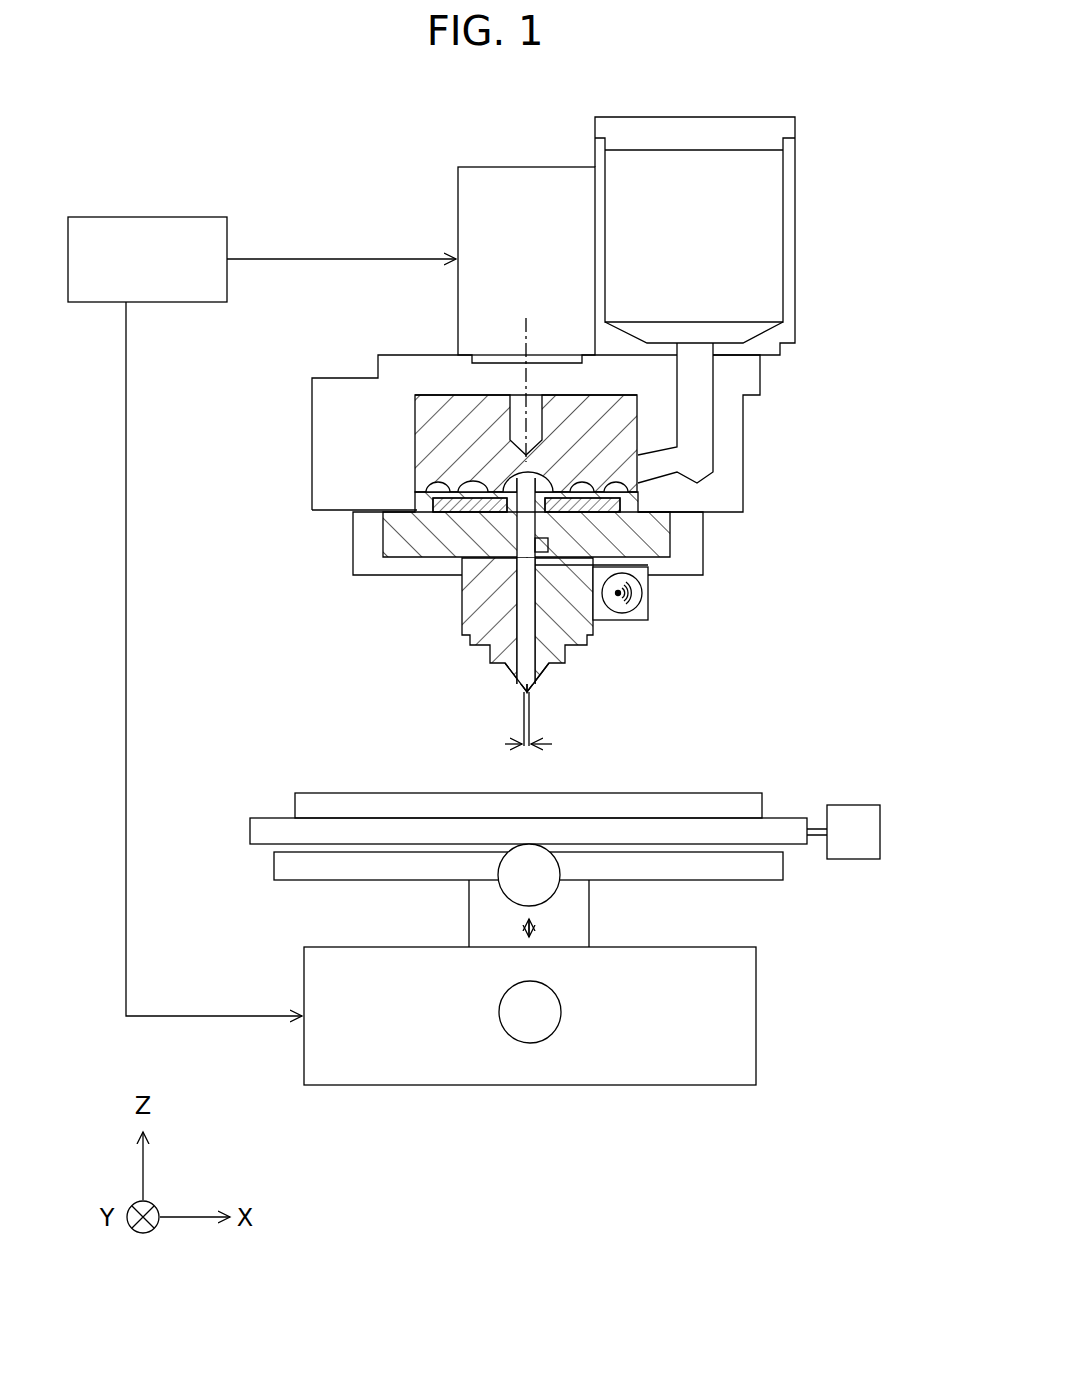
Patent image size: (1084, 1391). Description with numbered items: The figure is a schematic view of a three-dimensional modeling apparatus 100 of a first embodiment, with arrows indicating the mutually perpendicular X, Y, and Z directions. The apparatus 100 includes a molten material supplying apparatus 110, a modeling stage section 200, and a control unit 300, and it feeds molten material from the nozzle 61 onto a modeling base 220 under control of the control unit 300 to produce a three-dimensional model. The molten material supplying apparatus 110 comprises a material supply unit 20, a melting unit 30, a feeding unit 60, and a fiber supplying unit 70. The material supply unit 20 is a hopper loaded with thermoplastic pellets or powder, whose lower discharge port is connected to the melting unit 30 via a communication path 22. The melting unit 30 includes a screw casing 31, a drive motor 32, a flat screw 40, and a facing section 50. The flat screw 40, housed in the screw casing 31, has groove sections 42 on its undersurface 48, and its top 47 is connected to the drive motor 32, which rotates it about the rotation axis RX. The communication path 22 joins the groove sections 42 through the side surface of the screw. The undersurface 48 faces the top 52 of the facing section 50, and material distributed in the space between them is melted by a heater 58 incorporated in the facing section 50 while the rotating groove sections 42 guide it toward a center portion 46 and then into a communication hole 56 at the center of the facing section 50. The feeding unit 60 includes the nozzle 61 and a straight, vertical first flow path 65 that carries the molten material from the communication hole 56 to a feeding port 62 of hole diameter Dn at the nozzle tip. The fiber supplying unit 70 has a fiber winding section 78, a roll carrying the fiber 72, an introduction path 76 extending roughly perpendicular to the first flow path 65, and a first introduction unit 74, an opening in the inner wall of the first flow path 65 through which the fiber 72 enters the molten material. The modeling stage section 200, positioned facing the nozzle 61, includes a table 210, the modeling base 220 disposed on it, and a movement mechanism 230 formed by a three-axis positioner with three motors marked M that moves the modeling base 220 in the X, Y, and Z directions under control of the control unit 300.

The three-dimensional modeling apparatus 100 is at (186, 110).
The molten material supplying apparatus 110 is at (351, 123).
The material supply unit 20 is at (795, 228).
The communication path 22 is at (693, 416).
The melting unit 30 is at (361, 227).
The screw casing 31 is at (427, 355).
The drive motor 32 is at (458, 198).
The flat screw 40 is at (417, 418).
The groove sections 42 is at (470, 472).
The center portion 46 is at (445, 462).
The top 47 is at (450, 395).
The undersurface 48 is at (515, 480).
The facing section 50 is at (418, 527).
The top 52 is at (470, 500).
The communication hole 56 is at (530, 518).
The heater 58 is at (618, 506).
The first flow path 65 is at (560, 498).
The feeding unit 60 is at (361, 612).
The nozzle 61 is at (507, 673).
The feeding port 62 is at (529, 700).
The fiber supplying unit 70 is at (709, 627).
The fiber 72 is at (462, 614).
The first introduction unit 74 is at (588, 630).
The introduction path 76 is at (603, 620).
The fiber winding section 78 is at (650, 590).
The modeling stage section 200 is at (849, 774).
The table 210 is at (287, 818).
The modeling base 220 is at (705, 792).
The movement mechanism 230 is at (811, 929).
The control unit 300 is at (133, 217).